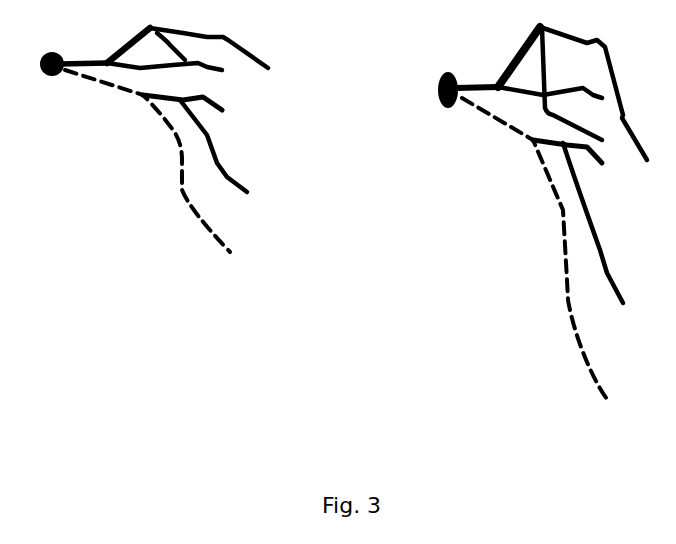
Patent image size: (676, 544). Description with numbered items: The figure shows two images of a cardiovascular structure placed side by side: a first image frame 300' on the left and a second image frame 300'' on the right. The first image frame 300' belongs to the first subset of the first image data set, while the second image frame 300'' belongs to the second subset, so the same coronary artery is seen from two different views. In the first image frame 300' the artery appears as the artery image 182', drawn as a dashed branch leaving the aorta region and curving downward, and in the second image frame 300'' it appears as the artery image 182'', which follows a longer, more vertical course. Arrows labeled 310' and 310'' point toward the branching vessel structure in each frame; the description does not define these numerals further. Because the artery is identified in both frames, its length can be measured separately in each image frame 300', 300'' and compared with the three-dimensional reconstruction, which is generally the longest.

The artery image 182' is at (130, 161).
The artery image 182'' is at (515, 250).
The vascular structure (first view) 310' is at (144, 181).
The vascular structure (second view) 310'' is at (532, 182).
The first image frame 300' is at (144, 223).
The second image frame 300'' is at (532, 224).